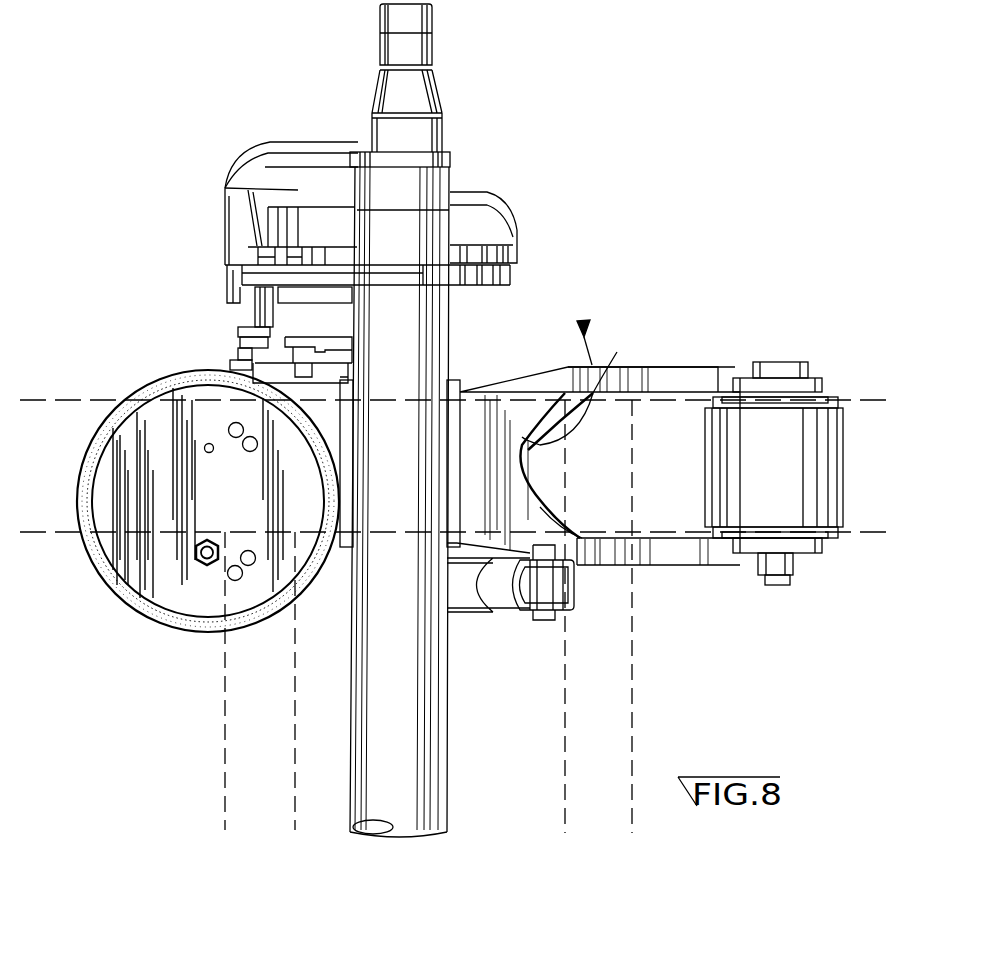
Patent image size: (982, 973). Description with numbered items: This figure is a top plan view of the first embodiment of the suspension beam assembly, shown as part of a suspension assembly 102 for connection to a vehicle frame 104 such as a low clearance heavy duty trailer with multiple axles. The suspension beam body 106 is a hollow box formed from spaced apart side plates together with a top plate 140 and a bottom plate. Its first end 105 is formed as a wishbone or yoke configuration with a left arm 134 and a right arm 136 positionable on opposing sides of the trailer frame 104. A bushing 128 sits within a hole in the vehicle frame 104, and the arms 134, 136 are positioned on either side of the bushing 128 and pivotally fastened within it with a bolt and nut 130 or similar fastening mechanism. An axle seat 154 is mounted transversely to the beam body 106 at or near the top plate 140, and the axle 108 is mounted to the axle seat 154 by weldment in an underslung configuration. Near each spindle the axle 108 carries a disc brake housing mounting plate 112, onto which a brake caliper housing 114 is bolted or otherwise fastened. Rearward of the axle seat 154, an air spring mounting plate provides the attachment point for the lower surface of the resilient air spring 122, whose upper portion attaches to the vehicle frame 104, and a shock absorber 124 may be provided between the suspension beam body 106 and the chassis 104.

The suspension assembly 102 is at (583, 322).
The vehicle frame 104 is at (88, 400).
The first end 105 is at (743, 372).
The suspension beam body 106 is at (693, 570).
The axle 108 is at (442, 232).
The disc brake housing mounting plate 112 is at (497, 278).
The brake caliper housing 114 is at (262, 177).
The air spring 122 is at (167, 382).
The shock absorber 124 is at (493, 610).
The bushing 128 is at (840, 520).
The bolt and nut 130 is at (757, 570).
The left arm 134 is at (697, 382).
The right arm 136 is at (648, 558).
The top plate 140 is at (617, 352).
The axle seat 154 is at (352, 385).